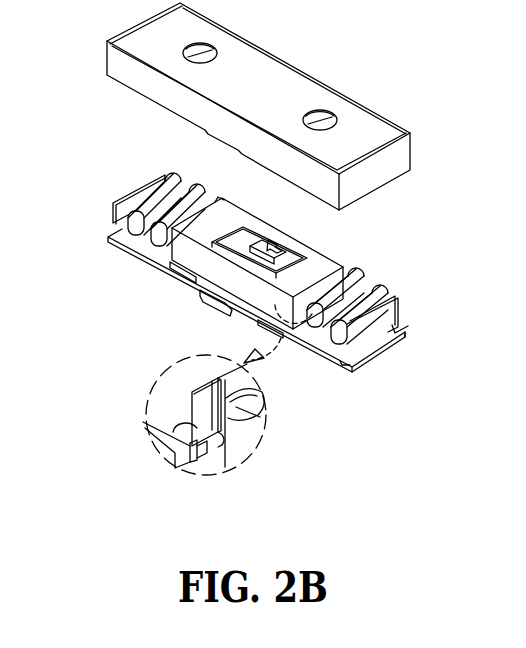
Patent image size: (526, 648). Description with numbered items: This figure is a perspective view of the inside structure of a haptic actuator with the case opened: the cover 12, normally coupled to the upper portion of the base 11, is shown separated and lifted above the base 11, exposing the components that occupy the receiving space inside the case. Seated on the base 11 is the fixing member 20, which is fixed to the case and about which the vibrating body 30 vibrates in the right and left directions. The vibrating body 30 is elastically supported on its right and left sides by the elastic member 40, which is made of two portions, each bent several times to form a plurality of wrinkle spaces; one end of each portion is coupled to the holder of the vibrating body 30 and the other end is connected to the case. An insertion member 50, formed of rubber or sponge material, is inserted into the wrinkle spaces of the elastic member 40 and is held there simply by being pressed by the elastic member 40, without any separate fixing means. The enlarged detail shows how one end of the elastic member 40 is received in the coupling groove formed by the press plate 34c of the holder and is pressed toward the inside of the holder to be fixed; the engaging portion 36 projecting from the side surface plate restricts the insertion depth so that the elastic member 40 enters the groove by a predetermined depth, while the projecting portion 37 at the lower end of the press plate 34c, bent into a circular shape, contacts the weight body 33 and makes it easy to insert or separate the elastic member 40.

The cover 12 is at (302, 87).
The base 11 is at (140, 257).
The vibrating body 30 is at (330, 263).
The fixing member 20 is at (265, 252).
The insertion member 50 is at (173, 215).
The elastic member 40 is at (110, 192).
The engaging portion 36 is at (152, 447).
The press plate 34c is at (237, 387).
The weight body 33 is at (198, 448).
The projecting portion 37 is at (215, 443).